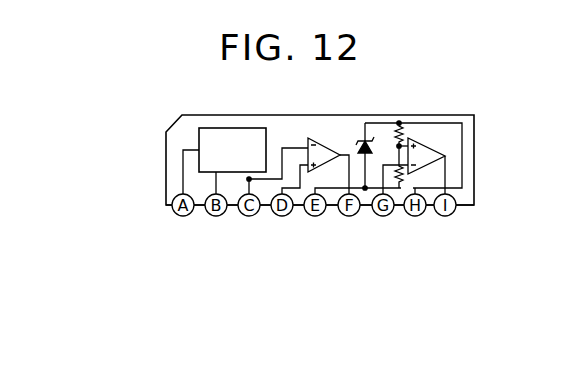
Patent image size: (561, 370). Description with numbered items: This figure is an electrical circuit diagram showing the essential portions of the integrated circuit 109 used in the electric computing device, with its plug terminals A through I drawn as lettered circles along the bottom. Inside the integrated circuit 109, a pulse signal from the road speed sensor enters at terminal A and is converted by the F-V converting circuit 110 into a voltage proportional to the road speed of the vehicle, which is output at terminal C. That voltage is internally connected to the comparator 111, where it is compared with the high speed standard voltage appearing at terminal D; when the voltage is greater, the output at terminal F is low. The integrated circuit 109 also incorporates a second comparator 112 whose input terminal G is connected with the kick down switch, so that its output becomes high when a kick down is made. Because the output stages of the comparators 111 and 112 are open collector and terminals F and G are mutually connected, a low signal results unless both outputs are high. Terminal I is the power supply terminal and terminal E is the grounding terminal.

The integrated circuit 109 is at (173, 124).
The F-V converting circuit 110 is at (228, 128).
The comparator 111 is at (331, 148).
The comparator 112 is at (433, 149).